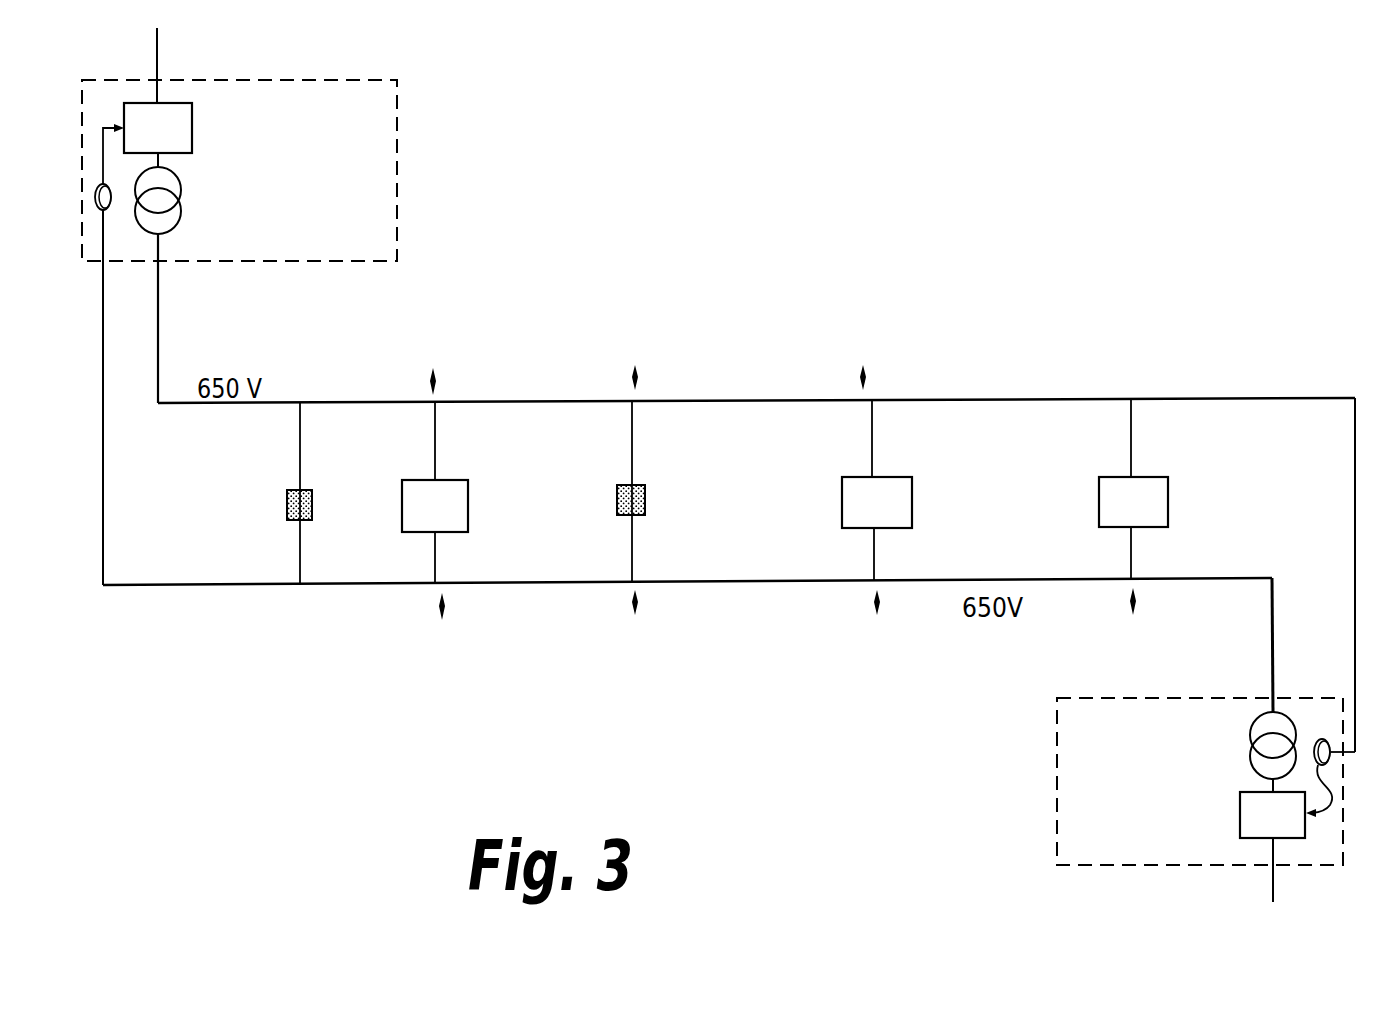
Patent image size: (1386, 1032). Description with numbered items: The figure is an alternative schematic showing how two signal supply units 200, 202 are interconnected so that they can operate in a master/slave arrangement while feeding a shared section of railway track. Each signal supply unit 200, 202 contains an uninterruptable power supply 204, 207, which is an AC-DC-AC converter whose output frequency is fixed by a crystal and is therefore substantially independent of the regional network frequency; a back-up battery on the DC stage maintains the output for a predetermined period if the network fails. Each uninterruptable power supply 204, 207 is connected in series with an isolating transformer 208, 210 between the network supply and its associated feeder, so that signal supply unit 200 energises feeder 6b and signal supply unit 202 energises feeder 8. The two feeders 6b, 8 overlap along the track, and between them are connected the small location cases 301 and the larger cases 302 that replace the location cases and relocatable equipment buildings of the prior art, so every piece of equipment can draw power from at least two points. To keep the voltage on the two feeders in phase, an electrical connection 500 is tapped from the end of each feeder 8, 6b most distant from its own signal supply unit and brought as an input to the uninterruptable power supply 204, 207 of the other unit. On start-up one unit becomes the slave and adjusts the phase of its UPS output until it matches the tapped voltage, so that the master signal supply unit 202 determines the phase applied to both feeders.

The signal supply unit 200 is at (397, 182).
The uninterruptable power supply 204 is at (182, 143).
The isolating transformer 208 is at (181, 210).
The electrical connection 500 is at (157, 586).
The feeder 6b is at (476, 398).
The feeder 8 is at (548, 584).
The small location case 301 is at (313, 492).
The larger case 302 is at (468, 514).
The signal supply unit 202 is at (1057, 775).
The isolating transformer 210 is at (1250, 738).
The uninterruptable power supply 207 is at (1272, 815).